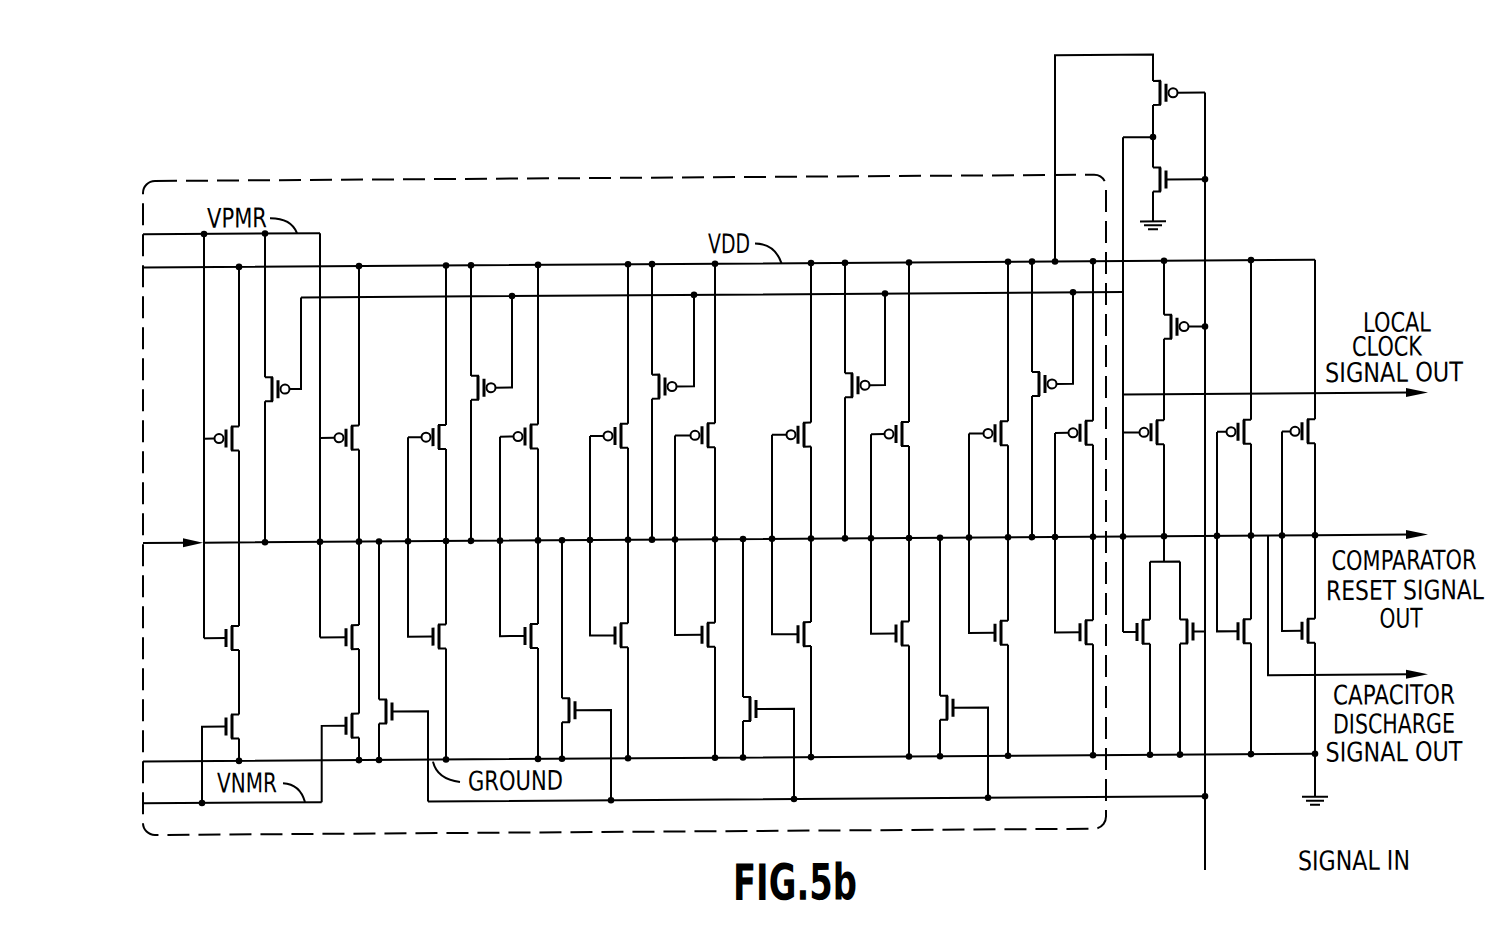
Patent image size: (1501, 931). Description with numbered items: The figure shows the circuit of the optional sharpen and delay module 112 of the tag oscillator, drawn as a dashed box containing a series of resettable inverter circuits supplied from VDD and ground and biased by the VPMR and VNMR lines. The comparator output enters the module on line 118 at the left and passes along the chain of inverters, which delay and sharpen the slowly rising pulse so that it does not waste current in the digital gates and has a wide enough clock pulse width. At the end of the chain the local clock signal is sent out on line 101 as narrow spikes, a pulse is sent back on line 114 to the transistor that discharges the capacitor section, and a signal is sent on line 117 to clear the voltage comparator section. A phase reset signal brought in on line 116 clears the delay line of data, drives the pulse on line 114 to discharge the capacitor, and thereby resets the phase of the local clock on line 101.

The sharpen and delay module 112 is at (317, 176).
The line 118 is at (163, 546).
The line 101 is at (1348, 400).
The line 117 is at (1352, 538).
The line 114 is at (1343, 678).
The line 116 is at (1207, 851).